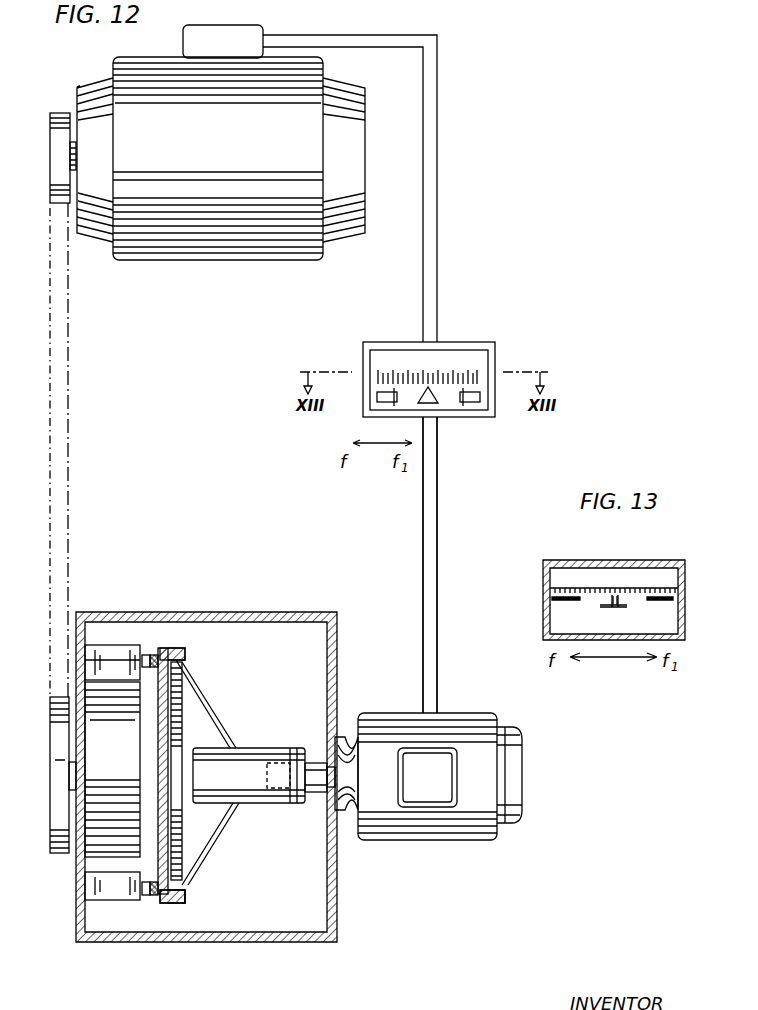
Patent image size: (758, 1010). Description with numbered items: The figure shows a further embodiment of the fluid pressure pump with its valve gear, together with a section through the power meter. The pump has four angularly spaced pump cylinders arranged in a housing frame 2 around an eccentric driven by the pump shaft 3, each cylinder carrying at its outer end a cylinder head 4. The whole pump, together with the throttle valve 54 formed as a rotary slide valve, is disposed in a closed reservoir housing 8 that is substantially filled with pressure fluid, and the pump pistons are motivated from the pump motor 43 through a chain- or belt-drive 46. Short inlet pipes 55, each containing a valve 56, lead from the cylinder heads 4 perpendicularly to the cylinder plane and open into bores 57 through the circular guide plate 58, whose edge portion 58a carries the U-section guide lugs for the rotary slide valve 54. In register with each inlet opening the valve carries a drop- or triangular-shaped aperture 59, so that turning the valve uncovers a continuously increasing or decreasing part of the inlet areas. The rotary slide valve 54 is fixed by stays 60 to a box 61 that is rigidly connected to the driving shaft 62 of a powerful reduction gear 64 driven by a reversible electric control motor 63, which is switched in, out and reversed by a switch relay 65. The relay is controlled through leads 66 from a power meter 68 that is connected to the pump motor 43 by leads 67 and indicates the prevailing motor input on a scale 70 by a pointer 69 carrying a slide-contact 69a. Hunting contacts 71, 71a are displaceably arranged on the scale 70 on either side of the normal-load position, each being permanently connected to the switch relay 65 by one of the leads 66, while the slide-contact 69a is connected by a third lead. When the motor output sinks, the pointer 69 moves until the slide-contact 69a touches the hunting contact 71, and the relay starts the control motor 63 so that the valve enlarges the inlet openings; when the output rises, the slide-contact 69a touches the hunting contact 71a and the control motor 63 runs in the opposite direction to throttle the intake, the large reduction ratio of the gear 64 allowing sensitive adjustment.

In FIG. 12, the housing frame 2 is at (85, 855).
In FIG. 12, the pump shaft 3 is at (68, 770).
In FIG. 12, the cylinder head 4 is at (90, 659).
In FIG. 12, the reservoir housing 8 is at (283, 612).
In FIG. 12, the pump motor 43 is at (217, 260).
In FIG. 12, the chain- or belt-drive 46 is at (68, 430).
In FIG. 12, the throttle valve 54 is at (184, 668).
In FIG. 12, the inlet pipe 55 is at (146, 655).
In FIG. 12, the valve 56 is at (154, 655).
In FIG. 12, the bore 57 is at (178, 650).
In FIG. 12, the guide plate 58 is at (158, 766).
In FIG. 12, the plate end 58a is at (185, 895).
In FIG. 12, the aperture 59 is at (182, 650).
In FIG. 12, the stay 60 is at (193, 774).
In FIG. 12, the box 61 is at (246, 752).
In FIG. 12, the driving shaft 62 is at (316, 795).
In FIG. 12, the electric control motor 63 is at (462, 713).
In FIG. 12, the reduction gear 64 is at (350, 737).
In FIG. 12, the switch relay 65 is at (430, 796).
In FIG. 12, the leads 66 is at (423, 565).
In FIG. 12, the leads 67 is at (437, 196).
In FIG. 12, the power meter 68 is at (378, 342).
In FIG. 13, the power meter 68 is at (545, 578).
In FIG. 12, the pointer 69 is at (434, 398).
In FIG. 13, the pointer 69 is at (623, 608).
In FIG. 13, the slide-contact 69a is at (628, 595).
In FIG. 12, the scale 70 is at (462, 372).
In FIG. 13, the scale 70 is at (660, 590).
In FIG. 12, the hunting contact 71 is at (377, 396).
In FIG. 13, the hunting contact 71 is at (556, 602).
In FIG. 12, the hunting contact 71a is at (472, 398).
In FIG. 13, the hunting contact 71a is at (668, 602).